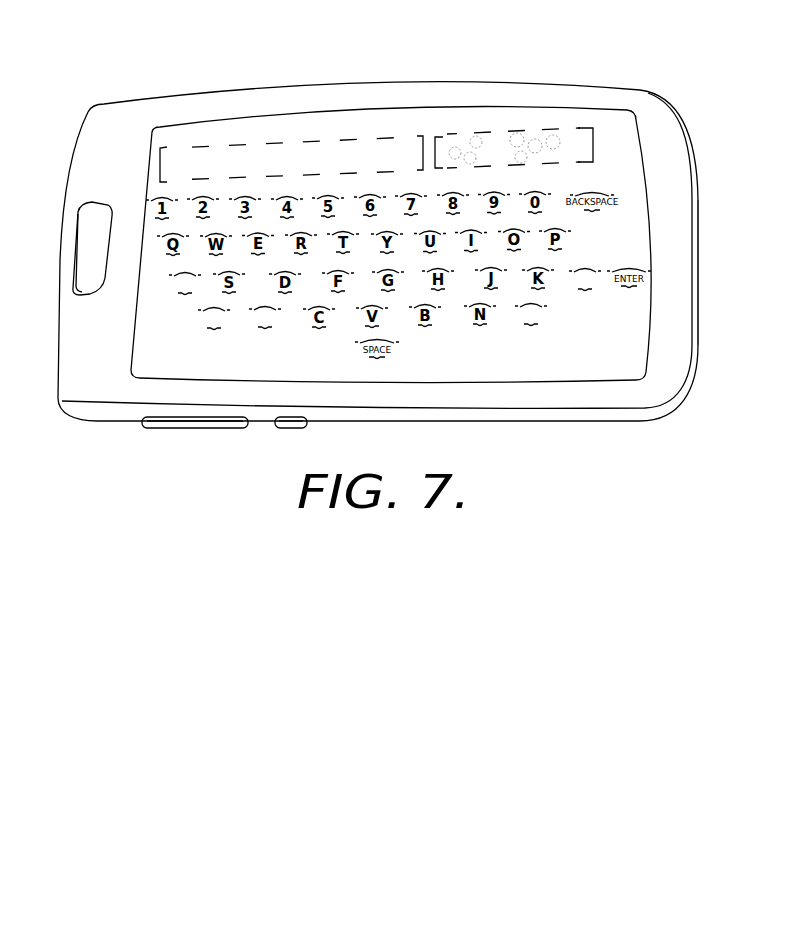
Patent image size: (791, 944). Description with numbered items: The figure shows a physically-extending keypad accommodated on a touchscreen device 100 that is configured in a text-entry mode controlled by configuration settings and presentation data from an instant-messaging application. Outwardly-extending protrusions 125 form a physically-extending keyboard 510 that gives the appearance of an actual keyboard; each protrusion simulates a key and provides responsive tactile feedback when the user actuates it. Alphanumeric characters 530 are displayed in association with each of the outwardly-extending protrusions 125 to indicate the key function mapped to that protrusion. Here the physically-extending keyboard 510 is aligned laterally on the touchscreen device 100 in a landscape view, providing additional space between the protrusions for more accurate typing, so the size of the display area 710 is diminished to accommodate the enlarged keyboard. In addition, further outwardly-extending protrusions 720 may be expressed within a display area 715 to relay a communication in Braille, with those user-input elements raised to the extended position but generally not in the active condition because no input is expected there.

The touchscreen device 100 is at (56, 115).
The outwardly-extending protrusions 125 is at (592, 280).
The physically-extending keyboard 510 is at (705, 197).
The alphanumeric characters 530 is at (259, 323).
The display area 710 is at (232, 142).
The display area 715 is at (477, 136).
The outwardly-extending protrusions 720 is at (558, 130).